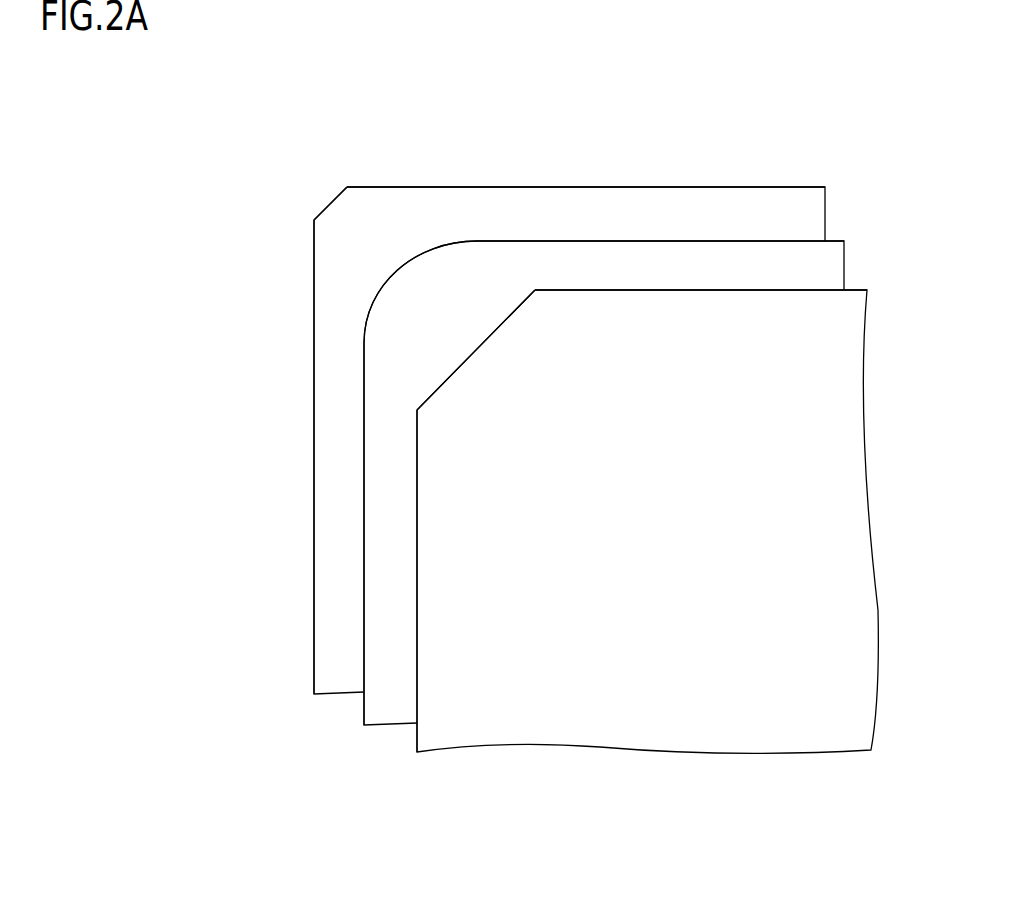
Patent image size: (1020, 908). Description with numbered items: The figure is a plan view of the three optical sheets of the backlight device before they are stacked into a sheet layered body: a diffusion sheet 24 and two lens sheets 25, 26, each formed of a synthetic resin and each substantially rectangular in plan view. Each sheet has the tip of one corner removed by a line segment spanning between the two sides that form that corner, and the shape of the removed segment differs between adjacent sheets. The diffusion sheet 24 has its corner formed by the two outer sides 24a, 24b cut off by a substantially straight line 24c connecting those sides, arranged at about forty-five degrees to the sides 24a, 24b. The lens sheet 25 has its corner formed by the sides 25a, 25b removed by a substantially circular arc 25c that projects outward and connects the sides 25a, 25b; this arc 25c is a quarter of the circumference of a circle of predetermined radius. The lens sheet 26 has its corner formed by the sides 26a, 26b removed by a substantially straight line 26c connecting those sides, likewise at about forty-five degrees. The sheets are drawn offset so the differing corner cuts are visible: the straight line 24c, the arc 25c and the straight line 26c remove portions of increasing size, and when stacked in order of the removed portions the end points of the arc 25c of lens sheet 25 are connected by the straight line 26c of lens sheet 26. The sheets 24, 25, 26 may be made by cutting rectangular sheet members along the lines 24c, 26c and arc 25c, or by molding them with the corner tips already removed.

The diffusion sheet 24 is at (638, 200).
The side of diffusion sheet 24a is at (455, 187).
The side of diffusion sheet 24b is at (315, 452).
The straight line 24c is at (327, 202).
The lens sheet 25 is at (691, 253).
The side of lens sheet 25a is at (507, 240).
The side of lens sheet 25b is at (363, 499).
The circular arc 25c is at (390, 285).
The lens sheet 26 is at (742, 305).
The side of lens sheet 26a is at (560, 290).
The side of lens sheet 26b is at (415, 559).
The straight line 26c is at (473, 352).